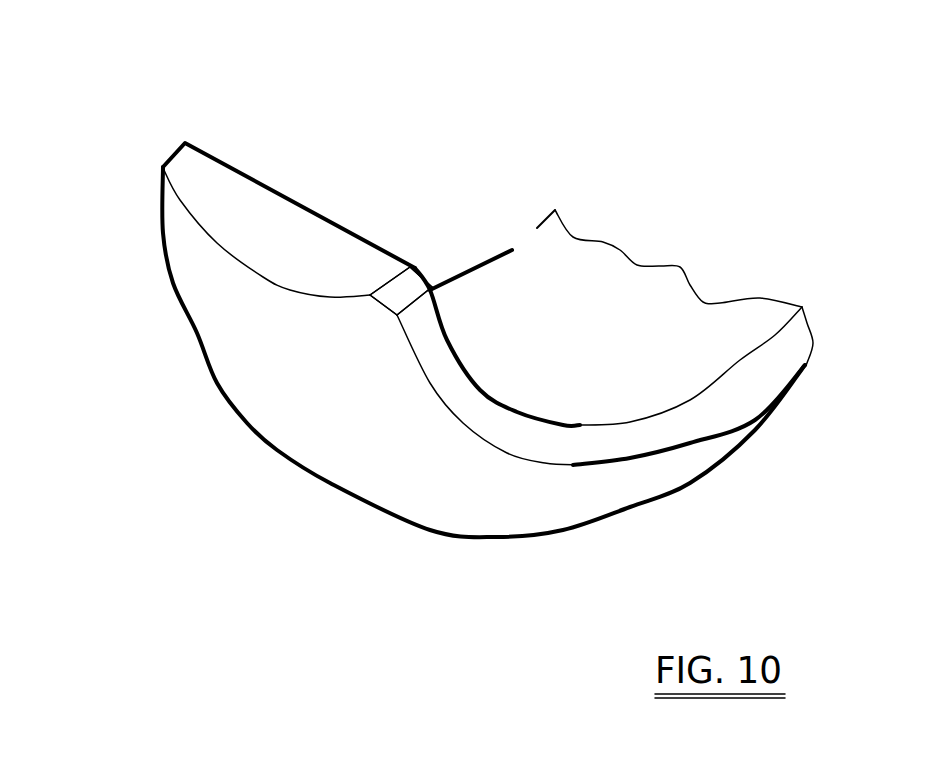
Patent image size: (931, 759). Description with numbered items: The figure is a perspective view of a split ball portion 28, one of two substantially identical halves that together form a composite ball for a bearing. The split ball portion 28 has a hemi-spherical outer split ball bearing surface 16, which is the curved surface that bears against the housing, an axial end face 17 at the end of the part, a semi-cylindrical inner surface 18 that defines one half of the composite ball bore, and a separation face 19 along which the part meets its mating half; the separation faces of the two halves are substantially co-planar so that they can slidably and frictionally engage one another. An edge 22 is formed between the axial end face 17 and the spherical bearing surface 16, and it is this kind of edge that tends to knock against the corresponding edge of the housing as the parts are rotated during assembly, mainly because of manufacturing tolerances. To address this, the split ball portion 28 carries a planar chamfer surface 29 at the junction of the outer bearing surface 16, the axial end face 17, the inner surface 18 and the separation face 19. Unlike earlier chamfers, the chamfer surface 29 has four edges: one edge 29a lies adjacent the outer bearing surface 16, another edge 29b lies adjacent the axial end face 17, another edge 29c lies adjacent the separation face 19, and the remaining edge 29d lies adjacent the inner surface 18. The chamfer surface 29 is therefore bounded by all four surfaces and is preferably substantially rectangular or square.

The hemi-spherical split ball bearing surface 16 is at (247, 385).
The axial end face 17 is at (628, 450).
The semi-cylindrical inner surface 18 is at (552, 292).
The separation face 19 is at (233, 193).
The edge 22 is at (520, 452).
The split ball portion 28 is at (397, 133).
The chamfer surface 29 is at (410, 290).
The edge 29a is at (380, 305).
The edge 29b is at (413, 307).
The edge 29c is at (390, 265).
The edge 29d is at (427, 278).